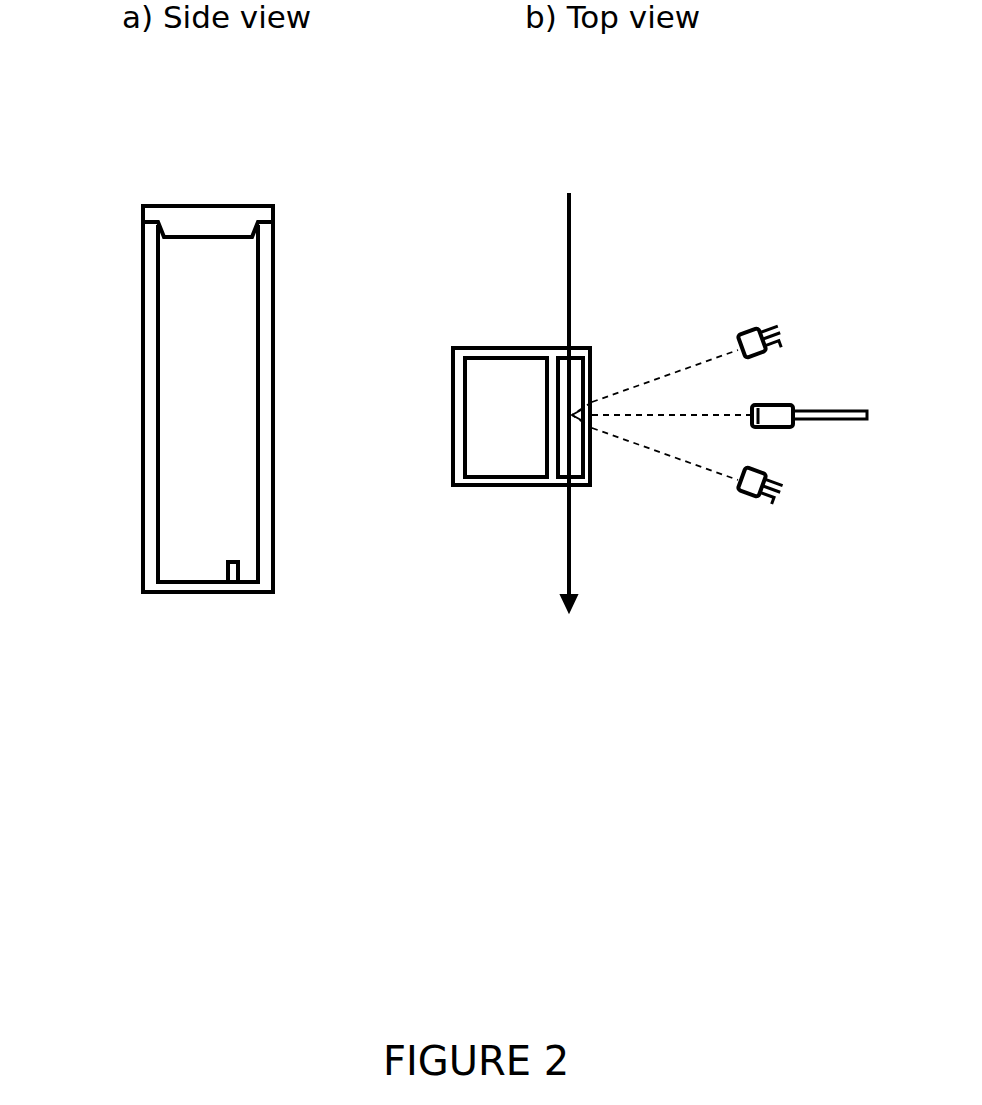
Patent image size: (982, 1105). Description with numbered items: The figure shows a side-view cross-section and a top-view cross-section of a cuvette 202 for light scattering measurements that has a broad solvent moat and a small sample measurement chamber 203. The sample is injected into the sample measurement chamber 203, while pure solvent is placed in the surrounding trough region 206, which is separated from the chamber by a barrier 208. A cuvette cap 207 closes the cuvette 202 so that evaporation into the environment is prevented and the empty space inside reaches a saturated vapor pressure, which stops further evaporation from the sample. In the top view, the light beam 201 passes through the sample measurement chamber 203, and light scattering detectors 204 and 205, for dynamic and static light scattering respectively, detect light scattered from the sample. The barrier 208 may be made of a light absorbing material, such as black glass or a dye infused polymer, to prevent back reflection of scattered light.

The light beam 201 is at (581, 279).
The cuvette 202 is at (148, 345).
The sample measurement chamber 203 is at (247, 572).
The light scattering detector (DLS) 204 is at (773, 385).
The light scattering detector (SLS) 205 is at (753, 320).
The trough region 206 is at (180, 572).
The cuvette cap 207 is at (204, 305).
The barrier 208 is at (232, 575).